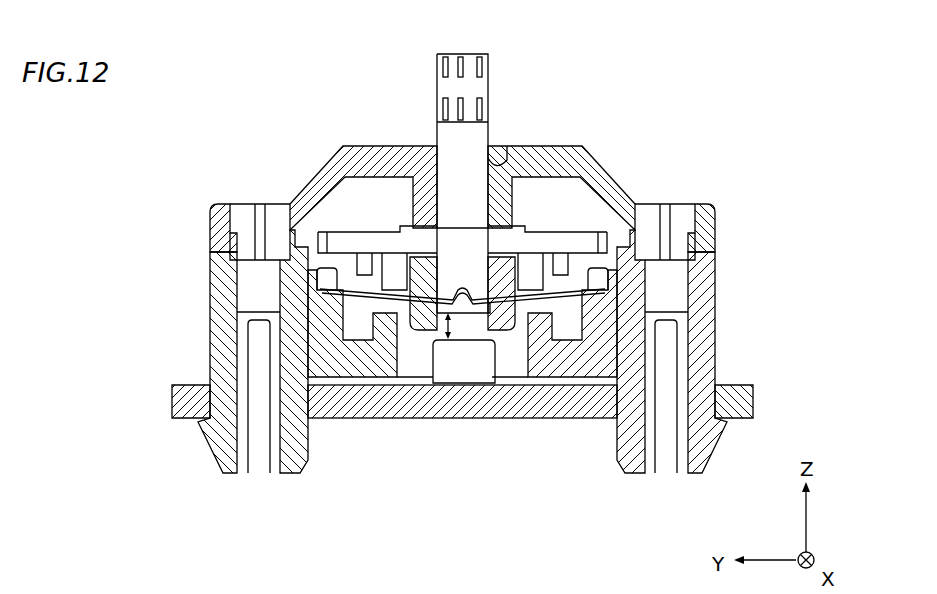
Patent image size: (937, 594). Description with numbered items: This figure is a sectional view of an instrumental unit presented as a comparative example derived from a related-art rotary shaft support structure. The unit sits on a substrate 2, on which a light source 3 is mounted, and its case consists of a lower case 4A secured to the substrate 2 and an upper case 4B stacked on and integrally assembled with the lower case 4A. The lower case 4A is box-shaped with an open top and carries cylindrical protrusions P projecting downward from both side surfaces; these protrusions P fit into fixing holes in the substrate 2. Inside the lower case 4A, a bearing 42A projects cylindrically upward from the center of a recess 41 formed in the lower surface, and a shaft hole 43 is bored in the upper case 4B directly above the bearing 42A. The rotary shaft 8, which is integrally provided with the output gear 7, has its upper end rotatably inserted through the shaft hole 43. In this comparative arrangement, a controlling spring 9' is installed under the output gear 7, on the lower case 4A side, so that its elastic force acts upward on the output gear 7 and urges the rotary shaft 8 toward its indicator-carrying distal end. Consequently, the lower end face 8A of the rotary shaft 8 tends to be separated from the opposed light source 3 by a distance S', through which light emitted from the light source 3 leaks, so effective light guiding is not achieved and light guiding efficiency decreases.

The upper case 4B is at (178, 204).
The lower case 4A is at (186, 340).
The cylindrical protrusions P is at (220, 360).
The substrate 2 is at (752, 392).
The output gear 7 is at (555, 240).
The rotary shaft 8 is at (460, 137).
The end face of the lower side of the rotary shaft 8A is at (497, 373).
The shaft hole 43 is at (512, 150).
The controlling spring 9' is at (612, 200).
The recess 41 is at (417, 300).
The bearing 42A is at (427, 283).
The light source 3 is at (465, 365).
The distance S' is at (458, 328).